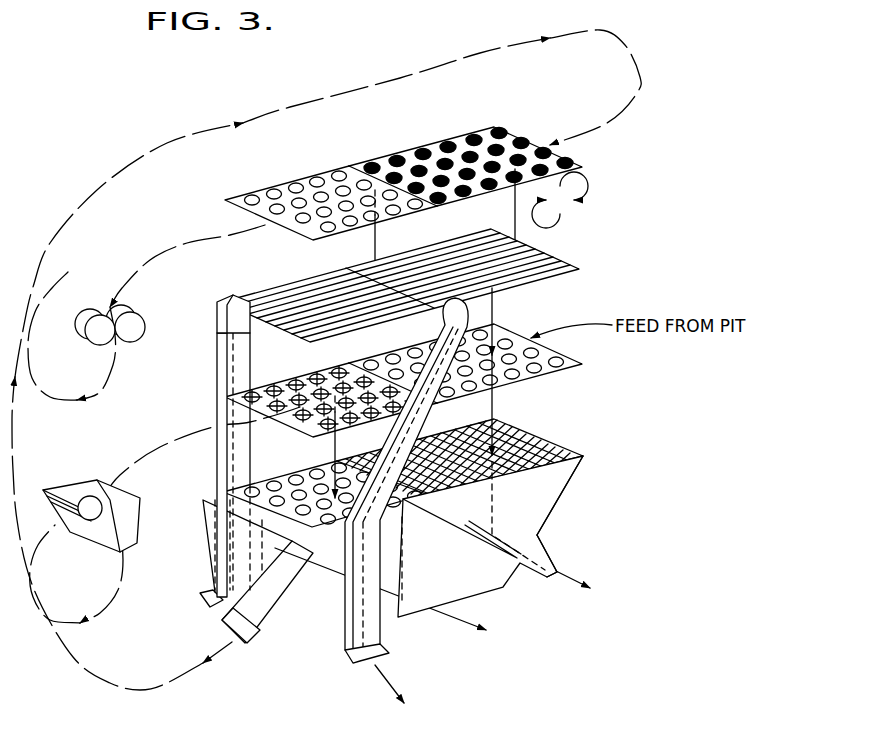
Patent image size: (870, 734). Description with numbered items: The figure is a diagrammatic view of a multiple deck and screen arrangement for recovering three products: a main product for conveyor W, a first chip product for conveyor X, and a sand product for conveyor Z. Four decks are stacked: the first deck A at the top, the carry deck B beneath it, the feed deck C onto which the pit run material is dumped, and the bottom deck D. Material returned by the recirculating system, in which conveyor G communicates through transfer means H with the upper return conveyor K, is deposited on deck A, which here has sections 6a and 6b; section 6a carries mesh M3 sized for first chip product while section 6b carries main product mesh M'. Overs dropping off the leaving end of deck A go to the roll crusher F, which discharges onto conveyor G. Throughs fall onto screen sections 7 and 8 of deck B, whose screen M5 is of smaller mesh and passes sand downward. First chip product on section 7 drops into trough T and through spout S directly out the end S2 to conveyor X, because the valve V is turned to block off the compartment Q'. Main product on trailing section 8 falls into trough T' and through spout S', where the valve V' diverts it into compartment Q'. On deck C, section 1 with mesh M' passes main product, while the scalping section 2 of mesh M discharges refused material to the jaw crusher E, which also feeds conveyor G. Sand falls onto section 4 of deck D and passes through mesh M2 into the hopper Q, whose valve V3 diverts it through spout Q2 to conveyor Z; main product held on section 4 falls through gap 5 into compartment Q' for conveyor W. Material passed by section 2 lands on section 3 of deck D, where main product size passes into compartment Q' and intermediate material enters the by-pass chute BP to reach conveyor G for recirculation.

The upper return conveyor K is at (364, 86).
The transfer means H is at (13, 447).
The conveyor G is at (167, 683).
The roll crusher F is at (133, 330).
The jaw crusher E is at (140, 550).
The first deck A is at (468, 179).
The screen section 6b is at (282, 183).
The screen section 6a is at (465, 162).
The mesh M' is at (408, 336).
The mesh M3 is at (450, 143).
The second deck B is at (497, 276).
The trough T is at (400, 285).
The screen section 8 is at (293, 285).
The screen section 7 is at (458, 259).
The screen M5 is at (480, 243).
The third deck C is at (493, 372).
The scalping section 2 is at (331, 393).
The scalping mesh M is at (333, 390).
The screen section 1 is at (502, 333).
The bottom deck D is at (506, 468).
The screen section 3 is at (272, 473).
The gap 5 is at (333, 465).
The screen section 4 is at (461, 453).
The mesh M2 is at (553, 440).
The damper V' is at (232, 549).
The by-pass chute BP is at (280, 590).
The product conveyor W is at (502, 596).
The compartment Q' is at (503, 536).
The valve V3 is at (497, 548).
The main compartment hopper Q is at (573, 495).
The spout Q2 is at (547, 547).
The product conveyor Z is at (672, 588).
The damper V is at (388, 533).
The chute S' is at (210, 465).
The trough T' is at (230, 296).
The chute S is at (385, 487).
The end S2 is at (347, 655).
The product conveyor X is at (533, 692).